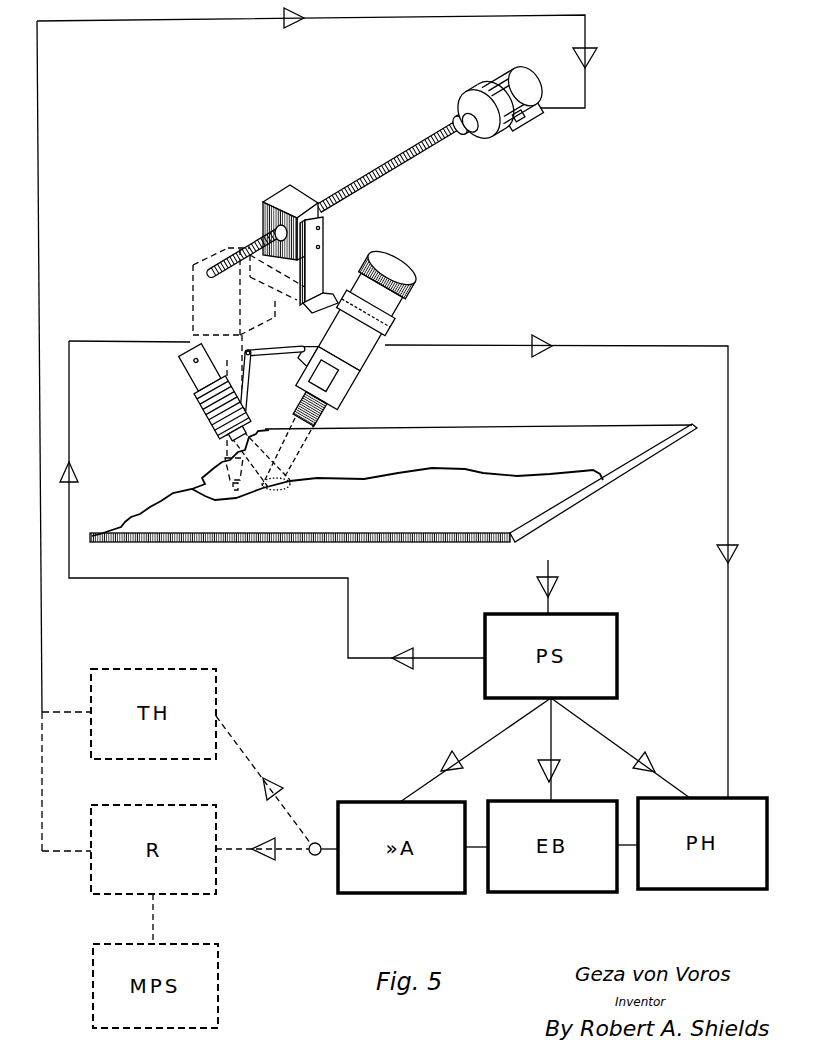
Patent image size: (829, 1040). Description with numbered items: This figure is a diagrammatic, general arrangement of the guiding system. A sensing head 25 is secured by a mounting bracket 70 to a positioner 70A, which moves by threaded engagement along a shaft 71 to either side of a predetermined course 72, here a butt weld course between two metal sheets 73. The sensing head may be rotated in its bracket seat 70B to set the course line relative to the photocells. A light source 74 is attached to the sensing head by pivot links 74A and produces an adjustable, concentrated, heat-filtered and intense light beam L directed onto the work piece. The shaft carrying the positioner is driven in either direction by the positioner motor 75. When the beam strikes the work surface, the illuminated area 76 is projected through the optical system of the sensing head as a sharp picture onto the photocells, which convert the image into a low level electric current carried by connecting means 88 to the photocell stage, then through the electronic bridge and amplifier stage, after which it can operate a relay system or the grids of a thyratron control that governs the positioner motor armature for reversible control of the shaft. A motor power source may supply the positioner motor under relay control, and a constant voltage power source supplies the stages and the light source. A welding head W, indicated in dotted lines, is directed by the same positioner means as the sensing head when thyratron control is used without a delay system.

The sensing head 25 is at (402, 320).
The mounting bracket 70 is at (330, 308).
The positioner 70A is at (332, 231).
The bracket seat 70B is at (366, 312).
The shaft 71 is at (394, 160).
The predetermined course 72 is at (473, 471).
The metal sheets 73 is at (622, 456).
The light source 74 is at (192, 388).
The pivot links 74A is at (252, 362).
The positioner motor 75 is at (476, 96).
The illuminated area 76 is at (283, 490).
The connecting means 88 is at (573, 344).
The welding head W is at (190, 264).
The light beam L is at (262, 471).